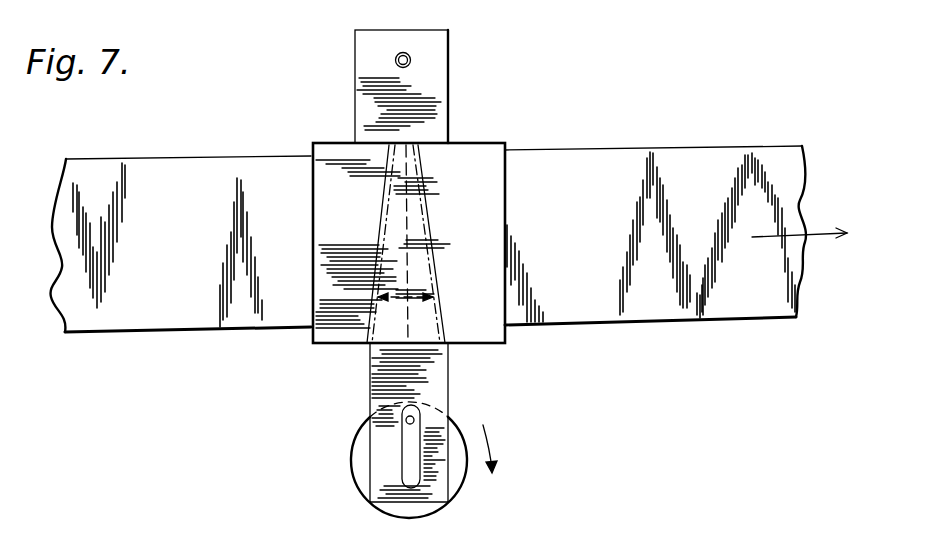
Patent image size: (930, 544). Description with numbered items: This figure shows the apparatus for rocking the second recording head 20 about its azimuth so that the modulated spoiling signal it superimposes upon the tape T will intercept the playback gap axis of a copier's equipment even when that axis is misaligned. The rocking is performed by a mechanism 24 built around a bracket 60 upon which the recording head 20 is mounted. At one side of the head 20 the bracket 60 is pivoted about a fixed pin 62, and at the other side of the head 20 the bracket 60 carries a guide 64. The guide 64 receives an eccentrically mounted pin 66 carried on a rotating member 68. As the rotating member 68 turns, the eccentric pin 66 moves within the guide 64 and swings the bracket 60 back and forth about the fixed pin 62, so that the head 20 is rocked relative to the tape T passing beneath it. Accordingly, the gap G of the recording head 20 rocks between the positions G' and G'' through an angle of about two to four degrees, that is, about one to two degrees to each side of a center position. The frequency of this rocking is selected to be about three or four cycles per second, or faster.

The recording head 20 is at (505, 212).
The tape T is at (745, 161).
The mechanism 24 is at (474, 65).
The bracket 60 is at (440, 108).
The fixed pin 62 is at (395, 64).
The guide 64 is at (408, 447).
The eccentrically mounted pin 66 is at (422, 423).
The rotating member 68 is at (462, 475).
The gap G is at (443, 244).
The first gap position G' is at (360, 244).
The second gap position G'' is at (446, 244).